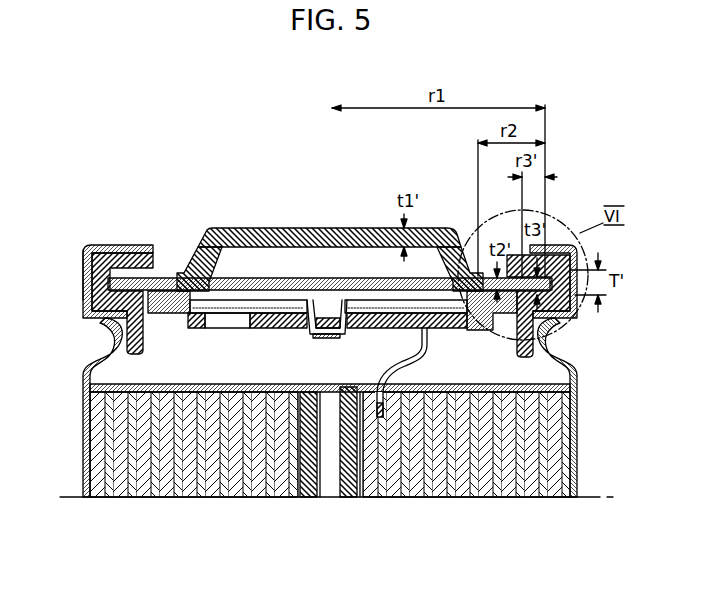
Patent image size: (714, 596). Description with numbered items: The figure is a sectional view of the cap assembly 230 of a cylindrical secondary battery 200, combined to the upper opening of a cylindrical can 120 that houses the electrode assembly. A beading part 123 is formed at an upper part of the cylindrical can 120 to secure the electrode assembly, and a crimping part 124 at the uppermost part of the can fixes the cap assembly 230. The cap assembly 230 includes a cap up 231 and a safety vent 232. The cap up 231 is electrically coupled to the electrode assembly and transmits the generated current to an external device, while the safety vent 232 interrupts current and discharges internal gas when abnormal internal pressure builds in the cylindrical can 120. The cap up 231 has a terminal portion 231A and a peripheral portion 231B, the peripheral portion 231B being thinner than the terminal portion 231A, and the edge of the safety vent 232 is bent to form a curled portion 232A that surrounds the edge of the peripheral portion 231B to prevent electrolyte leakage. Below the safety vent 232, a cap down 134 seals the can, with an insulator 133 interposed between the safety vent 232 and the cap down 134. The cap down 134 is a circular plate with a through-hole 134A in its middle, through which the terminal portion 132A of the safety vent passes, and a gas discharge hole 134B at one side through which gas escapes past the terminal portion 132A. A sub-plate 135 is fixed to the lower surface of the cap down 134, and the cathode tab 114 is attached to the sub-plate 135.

The cylindrical secondary battery 200 is at (112, 141).
The cylindrical can 120 is at (85, 419).
The beading part 123 is at (118, 333).
The cathode tab 114 is at (407, 375).
The crimping part 124 is at (108, 243).
The curled portion 232A is at (82, 258).
The insulator 133 is at (90, 297).
The sub-plate 135 is at (276, 331).
The cap down 134 is at (197, 328).
The gas discharge hole 134B is at (223, 326).
The terminal portion 132A is at (327, 338).
The through-hole 134A is at (348, 338).
The cap assembly 230 is at (330, 220).
The safety vent 232 is at (160, 277).
The cap up 231 is at (324, 225).
The terminal portion 231A is at (253, 227).
The peripheral portion 231B is at (175, 277).